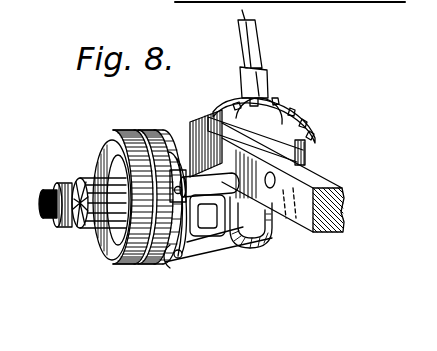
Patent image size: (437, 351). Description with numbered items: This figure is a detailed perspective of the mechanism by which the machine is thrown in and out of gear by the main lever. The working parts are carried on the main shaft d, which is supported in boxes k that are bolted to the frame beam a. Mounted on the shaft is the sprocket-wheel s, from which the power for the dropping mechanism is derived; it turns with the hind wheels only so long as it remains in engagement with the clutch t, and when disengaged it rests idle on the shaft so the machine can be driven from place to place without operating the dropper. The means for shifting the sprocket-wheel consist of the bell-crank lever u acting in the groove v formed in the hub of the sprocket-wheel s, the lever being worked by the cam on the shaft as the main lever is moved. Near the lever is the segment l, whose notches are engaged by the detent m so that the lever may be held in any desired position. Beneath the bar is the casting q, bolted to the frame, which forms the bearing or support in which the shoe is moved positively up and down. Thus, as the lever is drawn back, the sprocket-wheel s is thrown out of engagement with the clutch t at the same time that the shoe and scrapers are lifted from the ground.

The frame bar a is at (344, 201).
The main shaft d is at (63, 215).
The boxes k is at (240, 228).
The segment l is at (311, 141).
The detent m is at (275, 100).
The casting q is at (283, 238).
The sprocket-wheel s is at (125, 256).
The clutch t is at (89, 191).
The bell-crank lever u is at (168, 257).
The groove v is at (176, 163).